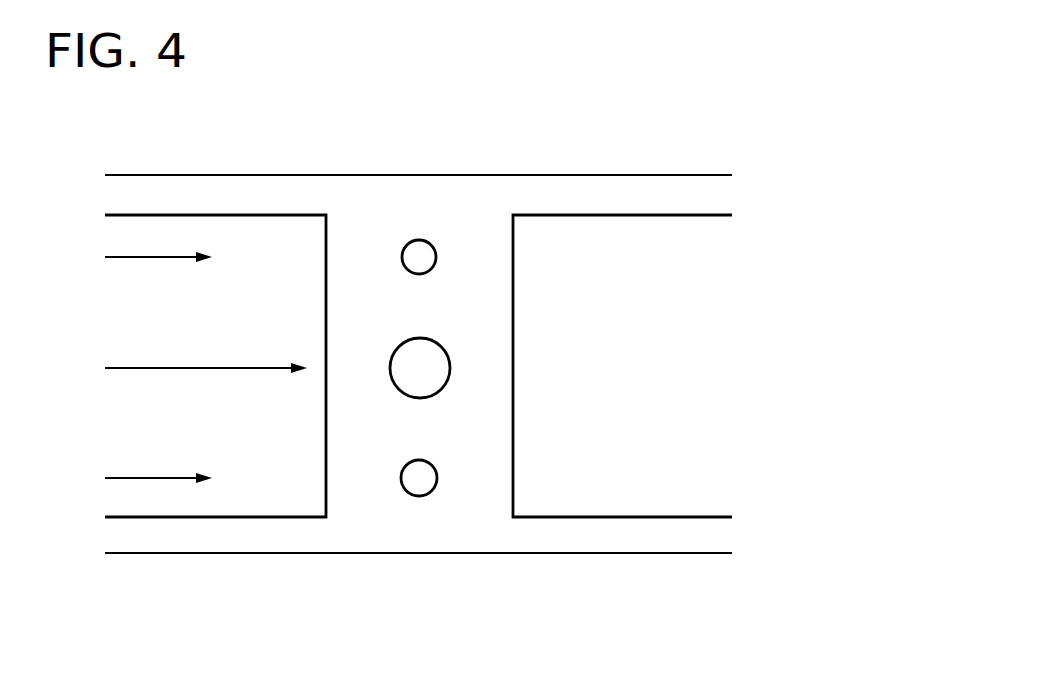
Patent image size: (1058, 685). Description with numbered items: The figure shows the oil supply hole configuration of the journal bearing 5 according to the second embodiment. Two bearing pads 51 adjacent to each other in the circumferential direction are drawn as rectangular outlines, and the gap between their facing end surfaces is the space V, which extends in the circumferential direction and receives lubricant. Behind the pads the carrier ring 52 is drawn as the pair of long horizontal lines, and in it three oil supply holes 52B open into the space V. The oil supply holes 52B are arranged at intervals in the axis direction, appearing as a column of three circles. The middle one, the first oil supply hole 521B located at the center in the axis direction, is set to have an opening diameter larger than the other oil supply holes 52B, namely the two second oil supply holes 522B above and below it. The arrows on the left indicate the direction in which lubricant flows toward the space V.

The journal bearing 5 is at (847, 236).
The bearing pad 51 is at (216, 240).
The carrier ring 52 is at (432, 555).
The oil supply hole 52B is at (551, 368).
The first oil supply hole 521B is at (451, 366).
The second oil supply hole 522B is at (436, 262).
The space V is at (476, 253).